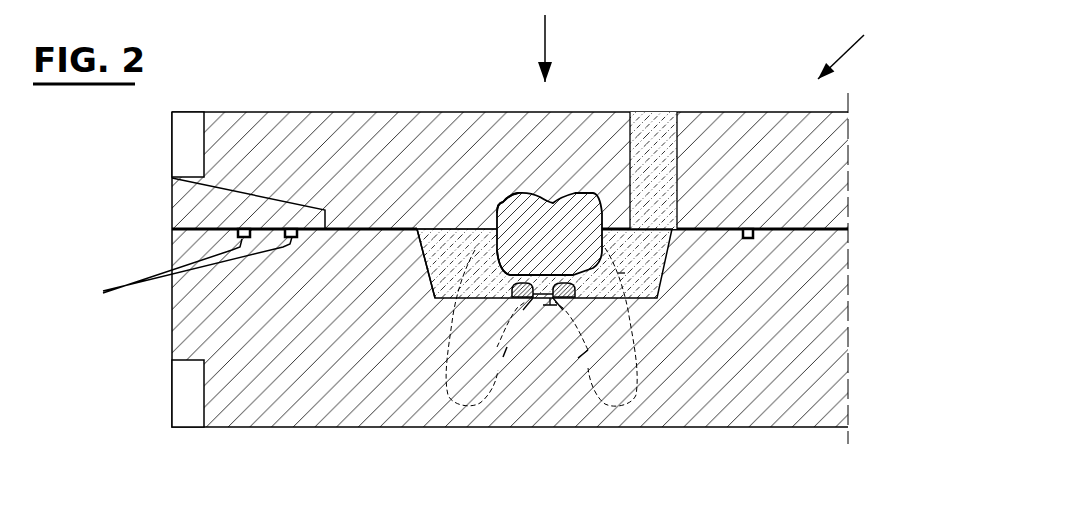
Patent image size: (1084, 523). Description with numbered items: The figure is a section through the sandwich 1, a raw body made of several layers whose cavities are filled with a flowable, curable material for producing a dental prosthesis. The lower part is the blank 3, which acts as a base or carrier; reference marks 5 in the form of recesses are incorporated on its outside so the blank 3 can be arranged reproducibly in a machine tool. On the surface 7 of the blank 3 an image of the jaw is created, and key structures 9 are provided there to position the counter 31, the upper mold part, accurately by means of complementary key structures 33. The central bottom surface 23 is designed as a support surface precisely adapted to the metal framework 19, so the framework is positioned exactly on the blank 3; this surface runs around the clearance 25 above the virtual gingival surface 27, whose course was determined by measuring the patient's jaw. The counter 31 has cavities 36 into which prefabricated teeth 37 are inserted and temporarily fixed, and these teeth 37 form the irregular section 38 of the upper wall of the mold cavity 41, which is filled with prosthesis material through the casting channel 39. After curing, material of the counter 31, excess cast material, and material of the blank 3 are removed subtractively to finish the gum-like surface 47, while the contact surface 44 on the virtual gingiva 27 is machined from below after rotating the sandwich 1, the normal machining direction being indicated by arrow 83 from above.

The sandwich 1 is at (849, 45).
The blank 3 is at (283, 392).
The reference marks 5 is at (185, 131).
The surface 7 is at (172, 178).
The key structures 9 is at (767, 488).
The metal framework 19 is at (484, 396).
The central bottom surface 23 is at (533, 298).
The clearance 25 is at (551, 308).
The virtual gingival surface 27 is at (547, 310).
The counter 31 is at (711, 128).
The key structures 33 is at (288, 229).
The cavities 36 is at (503, 203).
The prefabricated teeth 37 is at (530, 215).
The irregular section 38 is at (502, 268).
The casting channel 39 is at (652, 118).
The mold cavity 41 is at (426, 255).
The contact surface 44 is at (503, 357).
The surface 47 is at (625, 273).
The normal machining direction 83 is at (547, 43).